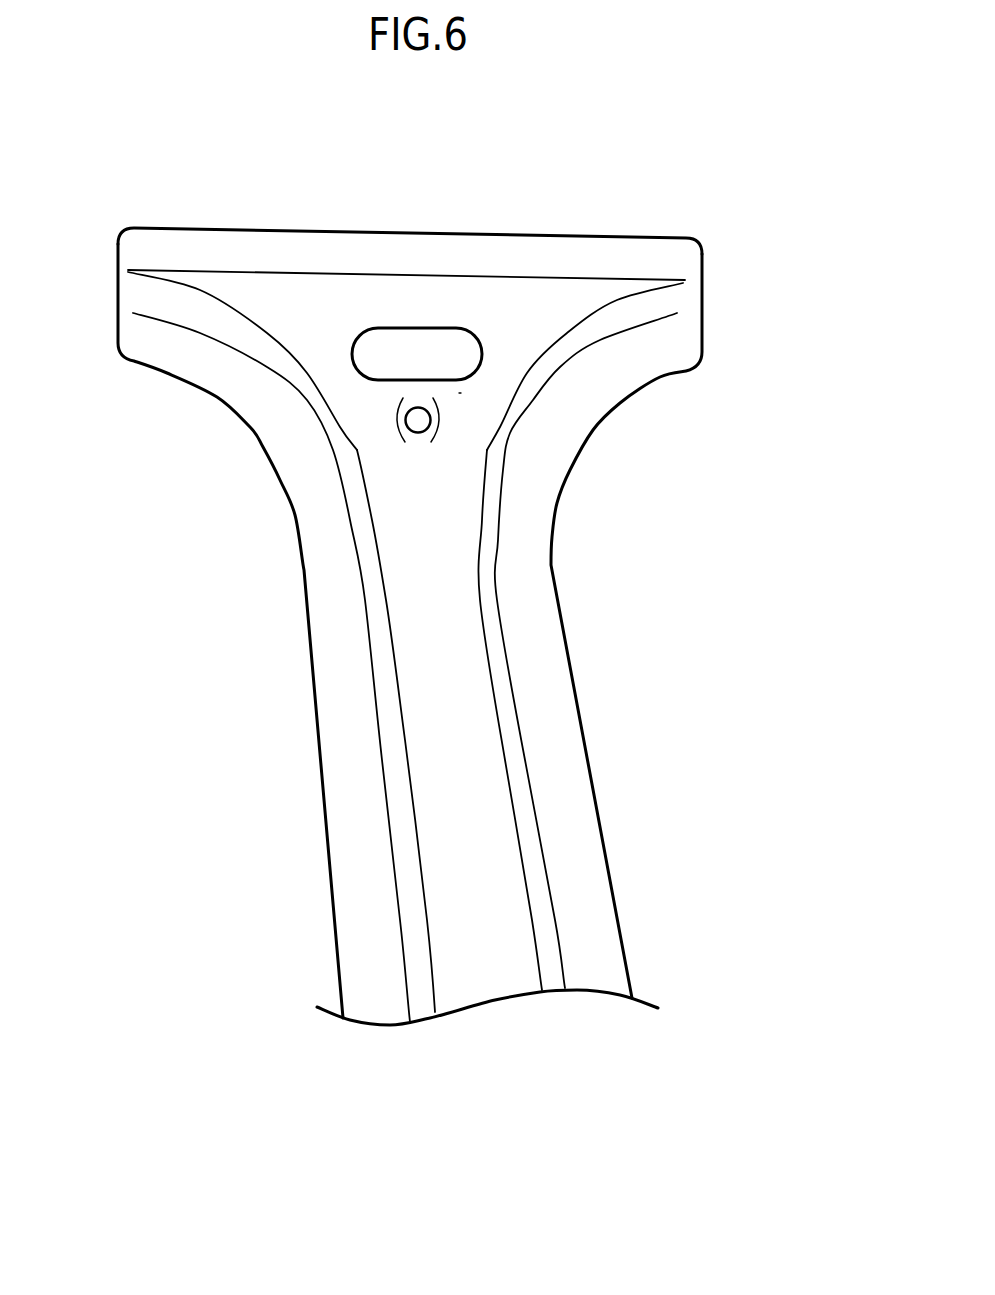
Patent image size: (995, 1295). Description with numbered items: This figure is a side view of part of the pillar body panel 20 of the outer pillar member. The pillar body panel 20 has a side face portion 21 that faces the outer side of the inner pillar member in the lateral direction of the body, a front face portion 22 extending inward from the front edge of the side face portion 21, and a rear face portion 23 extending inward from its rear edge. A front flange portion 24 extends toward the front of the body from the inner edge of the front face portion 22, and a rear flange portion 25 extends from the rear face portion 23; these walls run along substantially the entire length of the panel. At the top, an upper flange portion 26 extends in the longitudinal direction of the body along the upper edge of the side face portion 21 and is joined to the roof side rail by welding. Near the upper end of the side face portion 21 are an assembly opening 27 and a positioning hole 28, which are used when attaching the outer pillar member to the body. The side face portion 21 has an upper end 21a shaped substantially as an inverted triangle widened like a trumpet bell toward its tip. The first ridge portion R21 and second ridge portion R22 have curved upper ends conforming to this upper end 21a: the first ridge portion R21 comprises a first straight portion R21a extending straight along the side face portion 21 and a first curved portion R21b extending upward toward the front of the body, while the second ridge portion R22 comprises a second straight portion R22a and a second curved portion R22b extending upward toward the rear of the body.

The pillar body panel 20 is at (660, 180).
The side face portion 21 is at (497, 988).
The upper end of the side face portion 21a is at (460, 393).
The front face portion 22 is at (552, 978).
The rear face portion 23 is at (425, 1007).
The front flange portion 24 is at (603, 962).
The rear flange portion 25 is at (357, 975).
The upper flange portion 26 is at (458, 250).
The assembly opening 27 is at (426, 329).
The positioning hole 28 is at (419, 422).
The first ridge portion R21 is at (688, 505).
The first straight portion R21a is at (477, 573).
The first curved portion R21b is at (515, 393).
The second ridge portion R22 is at (138, 490).
The second straight portion R22a is at (381, 556).
The second curved portion R22b is at (311, 375).